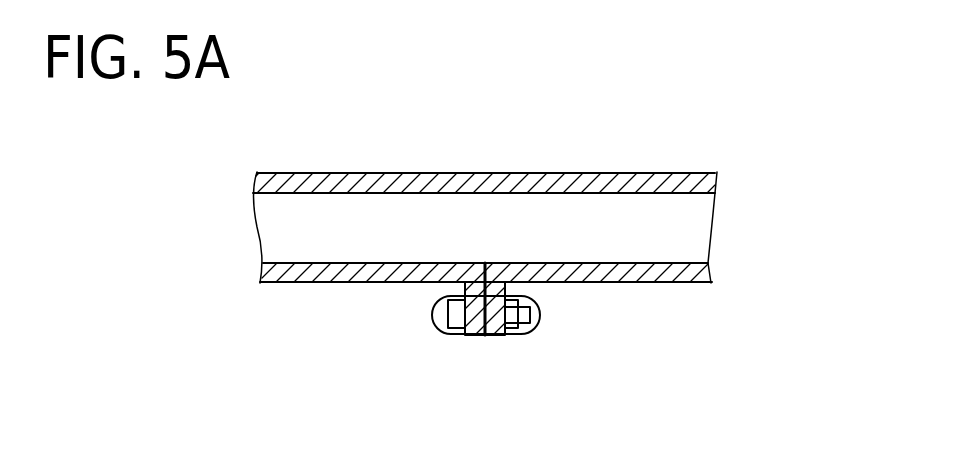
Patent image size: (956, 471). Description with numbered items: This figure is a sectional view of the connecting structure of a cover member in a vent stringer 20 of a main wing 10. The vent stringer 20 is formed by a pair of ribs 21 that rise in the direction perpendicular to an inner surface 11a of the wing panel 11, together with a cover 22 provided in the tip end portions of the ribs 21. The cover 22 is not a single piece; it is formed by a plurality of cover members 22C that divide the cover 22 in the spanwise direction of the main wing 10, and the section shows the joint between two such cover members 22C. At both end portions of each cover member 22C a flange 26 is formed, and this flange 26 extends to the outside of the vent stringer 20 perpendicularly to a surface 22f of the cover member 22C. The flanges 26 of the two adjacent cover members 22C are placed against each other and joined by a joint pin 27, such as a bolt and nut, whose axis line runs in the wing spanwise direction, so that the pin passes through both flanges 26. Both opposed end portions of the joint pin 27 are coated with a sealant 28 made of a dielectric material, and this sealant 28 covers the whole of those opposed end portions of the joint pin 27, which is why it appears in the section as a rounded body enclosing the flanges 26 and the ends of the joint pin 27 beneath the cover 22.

The main wing 10 is at (600, 125).
The wing panel 11 is at (670, 173).
The inner surface 11a is at (695, 194).
The rib 21 is at (277, 230).
The vent stringer 20 is at (262, 293).
The cover 22 is at (308, 283).
The cover member 22C is at (332, 283).
The surface of cover member 22f is at (705, 283).
The flange 26 is at (475, 335).
The joint pin 27 is at (458, 325).
The sealant 28 is at (435, 328).